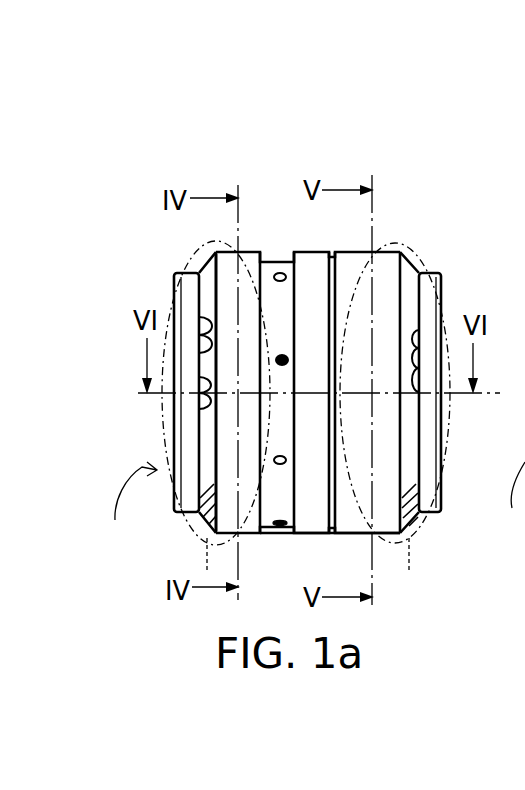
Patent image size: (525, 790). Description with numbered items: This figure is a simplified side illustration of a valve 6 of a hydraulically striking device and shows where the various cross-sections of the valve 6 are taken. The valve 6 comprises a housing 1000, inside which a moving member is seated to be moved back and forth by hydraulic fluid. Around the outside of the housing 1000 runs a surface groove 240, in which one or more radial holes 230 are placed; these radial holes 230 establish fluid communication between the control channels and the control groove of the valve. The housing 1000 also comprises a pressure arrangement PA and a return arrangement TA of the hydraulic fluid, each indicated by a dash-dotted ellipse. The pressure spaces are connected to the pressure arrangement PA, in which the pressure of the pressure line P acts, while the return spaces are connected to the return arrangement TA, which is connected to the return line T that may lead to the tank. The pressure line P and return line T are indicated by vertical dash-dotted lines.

The surface groove 240 is at (268, 250).
The radial hole 230 is at (284, 355).
The housing 1000 is at (305, 534).
The valve 6 is at (311, 515).
The return arrangement TA is at (192, 250).
The pressure arrangement PA is at (427, 258).
The return line T is at (199, 522).
The pressure line P is at (403, 527).